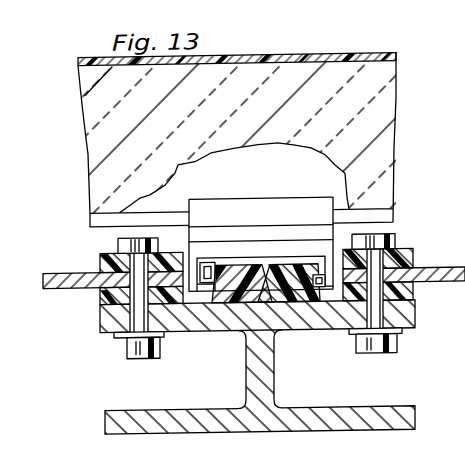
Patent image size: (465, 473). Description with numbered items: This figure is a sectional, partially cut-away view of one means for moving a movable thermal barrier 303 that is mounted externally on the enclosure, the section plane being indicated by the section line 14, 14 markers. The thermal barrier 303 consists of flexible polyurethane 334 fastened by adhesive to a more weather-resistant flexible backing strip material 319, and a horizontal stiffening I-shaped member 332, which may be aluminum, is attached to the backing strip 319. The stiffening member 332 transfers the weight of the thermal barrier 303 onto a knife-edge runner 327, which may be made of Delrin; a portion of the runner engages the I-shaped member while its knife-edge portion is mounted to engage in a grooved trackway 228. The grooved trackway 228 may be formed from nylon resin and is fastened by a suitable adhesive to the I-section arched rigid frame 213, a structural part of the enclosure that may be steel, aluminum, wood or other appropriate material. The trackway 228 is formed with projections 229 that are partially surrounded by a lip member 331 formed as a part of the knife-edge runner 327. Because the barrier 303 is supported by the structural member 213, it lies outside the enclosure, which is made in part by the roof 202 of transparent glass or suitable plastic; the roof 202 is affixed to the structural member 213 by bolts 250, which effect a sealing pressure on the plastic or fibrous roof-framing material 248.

The section line 14- 14 is at (432, 65).
The roof 202 is at (58, 286).
The arched rigid frame 213 is at (103, 423).
The grooved trackway 228 is at (235, 273).
The projections 229 is at (318, 280).
The roof-framing material 248 is at (100, 263).
The bolts 250 is at (383, 240).
The movable thermal barrier 303 is at (88, 118).
The backing strip material 319 is at (80, 61).
The knife-edge runner 327 is at (265, 243).
The lip member 331 is at (207, 268).
The stiffening I-shaped members 332 is at (178, 191).
The flexible polyurethane 334 is at (85, 86).